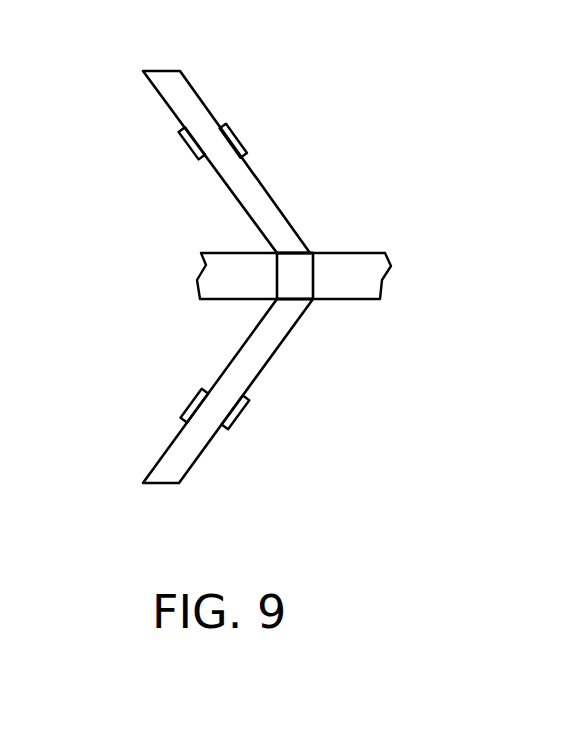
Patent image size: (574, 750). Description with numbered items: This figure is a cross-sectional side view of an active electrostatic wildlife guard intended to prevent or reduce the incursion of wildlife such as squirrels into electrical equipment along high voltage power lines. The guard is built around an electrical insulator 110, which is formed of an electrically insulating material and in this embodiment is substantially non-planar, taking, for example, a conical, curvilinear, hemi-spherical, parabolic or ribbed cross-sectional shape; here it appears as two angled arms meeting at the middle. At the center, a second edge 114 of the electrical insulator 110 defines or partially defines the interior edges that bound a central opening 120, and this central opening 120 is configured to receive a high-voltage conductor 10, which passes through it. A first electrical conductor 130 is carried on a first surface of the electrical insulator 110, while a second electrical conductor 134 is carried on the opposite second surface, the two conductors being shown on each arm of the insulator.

The high-voltage conductor 10 is at (367, 253).
The electrical insulator 110 is at (187, 80).
The second edge 114 is at (296, 252).
The central opening 120 is at (302, 283).
The first electrical conductor 130 is at (184, 142).
The second electrical conductor 134 is at (236, 134).